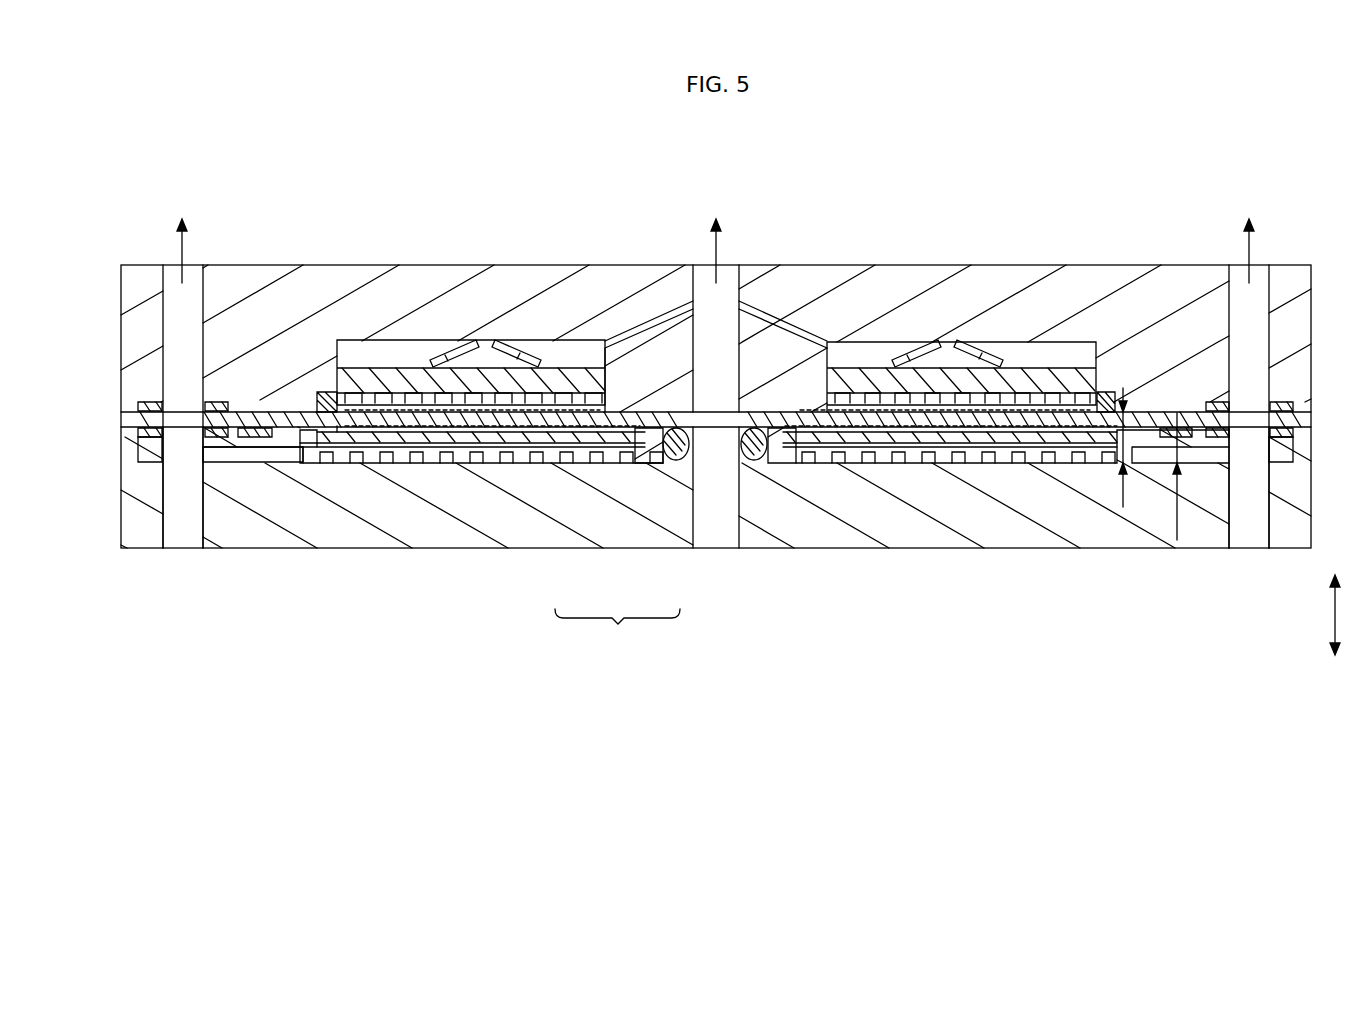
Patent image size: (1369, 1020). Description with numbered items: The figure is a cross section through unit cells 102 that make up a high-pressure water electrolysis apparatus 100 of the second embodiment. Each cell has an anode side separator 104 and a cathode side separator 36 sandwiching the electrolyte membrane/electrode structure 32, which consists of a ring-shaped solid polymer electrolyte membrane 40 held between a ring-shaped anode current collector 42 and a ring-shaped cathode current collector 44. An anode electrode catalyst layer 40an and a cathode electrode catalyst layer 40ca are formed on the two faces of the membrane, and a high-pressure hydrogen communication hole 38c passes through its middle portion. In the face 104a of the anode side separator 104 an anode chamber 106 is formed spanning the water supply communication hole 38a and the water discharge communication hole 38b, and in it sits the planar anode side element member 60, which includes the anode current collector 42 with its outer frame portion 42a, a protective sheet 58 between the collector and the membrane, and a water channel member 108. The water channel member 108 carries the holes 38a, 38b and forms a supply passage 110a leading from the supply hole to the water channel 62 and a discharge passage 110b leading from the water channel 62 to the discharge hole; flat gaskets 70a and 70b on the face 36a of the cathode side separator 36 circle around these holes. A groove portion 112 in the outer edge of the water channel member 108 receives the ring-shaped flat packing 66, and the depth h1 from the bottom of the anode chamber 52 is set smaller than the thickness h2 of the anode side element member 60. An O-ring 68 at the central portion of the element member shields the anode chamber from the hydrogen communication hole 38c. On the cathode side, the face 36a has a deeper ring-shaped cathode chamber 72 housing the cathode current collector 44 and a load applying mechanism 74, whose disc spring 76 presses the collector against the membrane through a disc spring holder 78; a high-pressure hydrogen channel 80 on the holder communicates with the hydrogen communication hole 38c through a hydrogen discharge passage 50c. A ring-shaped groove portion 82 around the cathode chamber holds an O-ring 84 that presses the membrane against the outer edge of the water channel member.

The high-pressure water electrolysis apparatus 100 is at (897, 131).
The unit cells 102 is at (800, 131).
The electrolyte membrane/electrode structure 32 is at (121, 419).
The cathode side separator 36 is at (121, 263).
The face 36a is at (694, 415).
The water supply communication hole 38a is at (202, 528).
The water discharge communication hole 38b is at (1268, 527).
The high-pressure hydrogen communication hole 38c is at (738, 533).
The solid polymer electrolyte membrane 40 is at (852, 392).
The cathode electrode catalyst layer 40ca is at (1028, 398).
The anode electrode catalyst layer 40an is at (930, 463).
The anode current collector 42 is at (512, 447).
The frame portion 42a is at (343, 448).
The cathode current collector 44 is at (604, 380).
The hydrogen discharge passage 50c is at (650, 320).
The anode chamber 52 is at (410, 462).
The protective sheet 58 is at (560, 465).
The anode side element member 60 is at (617, 630).
The water channel 62 is at (500, 437).
The flat packing 66 is at (247, 427).
The O-ring 68 is at (757, 462).
The flat gasket 70a is at (150, 402).
The flat gasket 70b is at (1288, 405).
The cathode chamber 72 is at (380, 339).
The load applying mechanism 74 is at (500, 360).
The disc spring 76 is at (452, 350).
The disc spring holder 78 is at (555, 398).
The high-pressure hydrogen channel 80 is at (400, 380).
The groove portion 82 is at (314, 445).
The O-ring 84 is at (326, 392).
The anode side separator 104 is at (121, 550).
The face 104a is at (150, 437).
The anode chamber 106 is at (285, 452).
The water channel member 108 is at (648, 465).
The supply passage 110a is at (250, 463).
The discharge passage 110b is at (1197, 455).
The groove portion 112 is at (258, 428).
The depth h1 is at (1162, 476).
The thickness h2 is at (1110, 447).